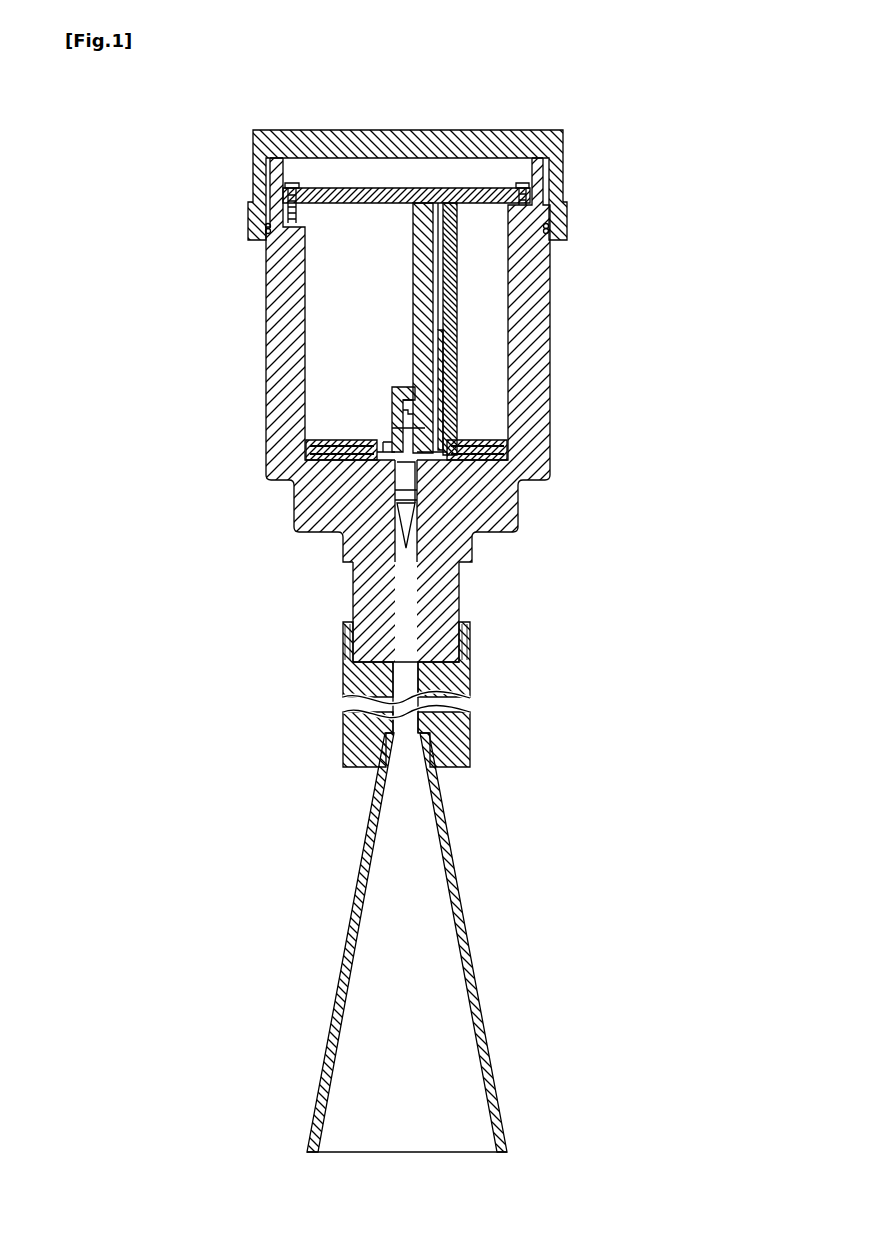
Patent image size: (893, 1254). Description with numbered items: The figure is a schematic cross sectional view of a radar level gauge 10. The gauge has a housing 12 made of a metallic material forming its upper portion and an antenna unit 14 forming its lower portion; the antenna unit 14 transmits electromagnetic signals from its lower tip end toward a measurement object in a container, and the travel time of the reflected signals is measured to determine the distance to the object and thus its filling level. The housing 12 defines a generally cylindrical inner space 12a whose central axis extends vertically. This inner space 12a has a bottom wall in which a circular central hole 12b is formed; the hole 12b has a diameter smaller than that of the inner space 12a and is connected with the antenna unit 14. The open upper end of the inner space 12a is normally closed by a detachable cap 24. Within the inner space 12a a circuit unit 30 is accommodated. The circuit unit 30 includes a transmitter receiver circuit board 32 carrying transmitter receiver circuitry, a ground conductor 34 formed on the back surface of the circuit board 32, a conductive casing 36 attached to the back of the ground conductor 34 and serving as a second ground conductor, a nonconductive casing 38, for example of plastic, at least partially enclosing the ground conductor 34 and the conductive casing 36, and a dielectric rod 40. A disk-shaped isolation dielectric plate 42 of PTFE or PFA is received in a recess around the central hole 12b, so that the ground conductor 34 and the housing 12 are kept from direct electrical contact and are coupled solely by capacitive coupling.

The radar level gauge 10 is at (665, 156).
The housing 12 is at (277, 281).
The generally cylindrical inner space 12a is at (315, 358).
The circular central hole 12b is at (403, 612).
The antenna unit 14 is at (459, 902).
The detachable cap 24 is at (252, 183).
The circuit unit 30 is at (348, 413).
The transmitter receiver circuit board 32 is at (443, 344).
The ground conductor 34 is at (413, 298).
The conductive casing 36 is at (391, 395).
The nonconductive casing 38 is at (413, 197).
The dielectric rod 40 is at (408, 480).
The isolation dielectric plate 42 is at (425, 457).